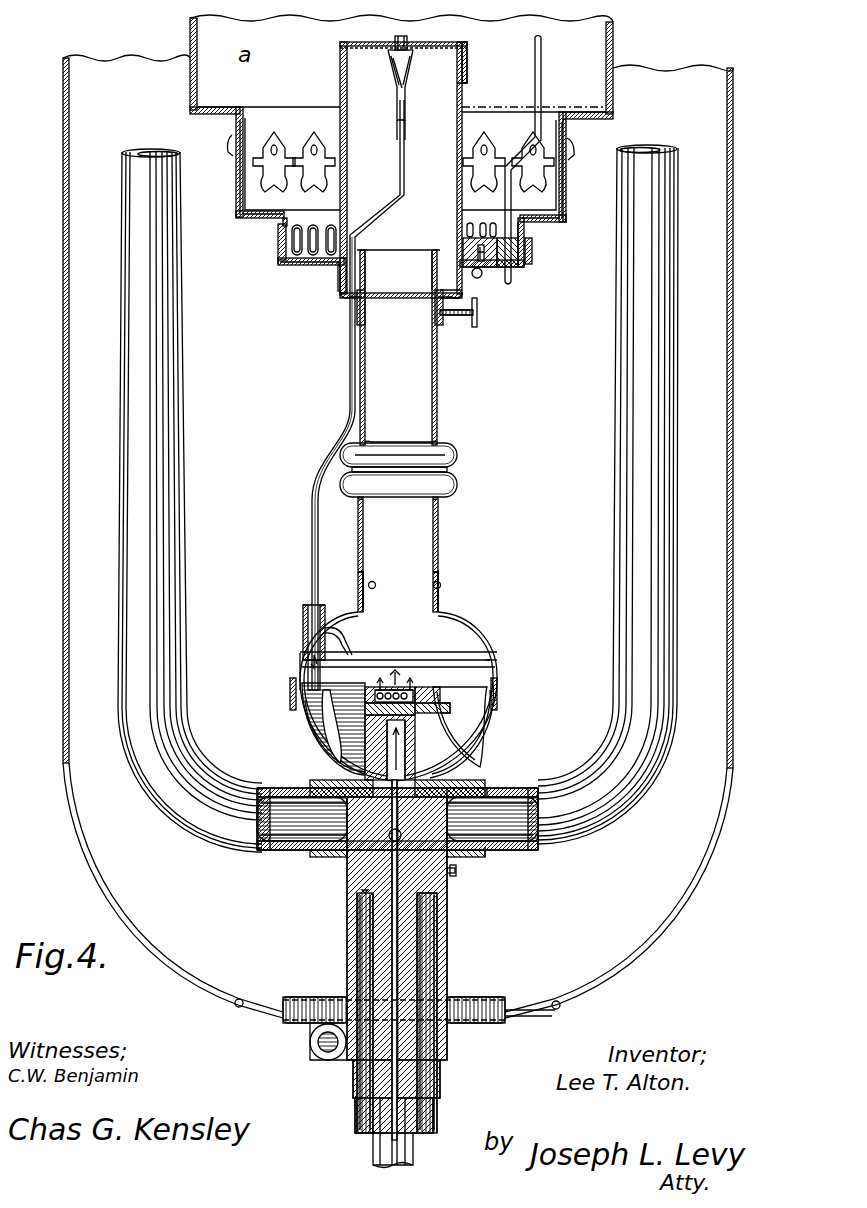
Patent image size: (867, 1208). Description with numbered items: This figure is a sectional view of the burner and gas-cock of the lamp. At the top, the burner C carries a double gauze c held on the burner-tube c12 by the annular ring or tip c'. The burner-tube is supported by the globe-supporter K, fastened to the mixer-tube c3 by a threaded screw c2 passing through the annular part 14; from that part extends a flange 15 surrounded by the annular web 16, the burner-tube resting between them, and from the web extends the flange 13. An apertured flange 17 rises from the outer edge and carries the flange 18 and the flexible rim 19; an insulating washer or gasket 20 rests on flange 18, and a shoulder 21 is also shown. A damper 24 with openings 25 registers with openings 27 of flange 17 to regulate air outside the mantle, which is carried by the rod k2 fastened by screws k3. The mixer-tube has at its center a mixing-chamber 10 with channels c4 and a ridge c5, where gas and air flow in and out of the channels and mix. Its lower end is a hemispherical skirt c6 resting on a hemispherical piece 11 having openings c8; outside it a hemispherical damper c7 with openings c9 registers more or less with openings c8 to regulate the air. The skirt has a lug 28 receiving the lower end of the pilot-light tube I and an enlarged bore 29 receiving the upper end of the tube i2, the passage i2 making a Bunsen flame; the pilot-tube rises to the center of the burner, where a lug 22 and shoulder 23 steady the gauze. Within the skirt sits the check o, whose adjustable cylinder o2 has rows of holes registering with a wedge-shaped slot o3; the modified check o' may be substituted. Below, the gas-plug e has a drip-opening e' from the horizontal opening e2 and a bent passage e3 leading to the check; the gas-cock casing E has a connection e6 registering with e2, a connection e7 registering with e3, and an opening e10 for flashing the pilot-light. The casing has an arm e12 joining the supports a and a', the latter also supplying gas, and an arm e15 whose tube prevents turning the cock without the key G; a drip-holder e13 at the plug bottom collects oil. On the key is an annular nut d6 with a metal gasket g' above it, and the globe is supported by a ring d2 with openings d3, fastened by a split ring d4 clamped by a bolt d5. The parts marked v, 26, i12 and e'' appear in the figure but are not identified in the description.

The support a is at (398, 498).
The supply-pipe support a' is at (415, 536).
The insulating washer or gasket 20 is at (246, 220).
The flexible rim 19 is at (236, 200).
The flange 18 is at (262, 225).
The shoulder 21 is at (228, 132).
The rod k2 is at (541, 105).
The screws k3 is at (533, 262).
The openings 25 is at (280, 243).
The flange 13 is at (312, 258).
The damper 24 is at (278, 260).
The apertured flange 17 is at (290, 265).
The openings 27 is at (330, 262).
The block 26 is at (536, 252).
The annular web 16 is at (476, 278).
The burner C is at (403, 170).
The double gauze c is at (462, 54).
The annular ring or tip c' is at (479, 62).
The burner-tube c12 is at (470, 100).
The lug 22 is at (406, 44).
The fitting i12 is at (394, 47).
The valve v is at (410, 55).
The shoulder 23 is at (388, 56).
The pilot-light tube I is at (466, 962).
The mixer-tube c3 is at (447, 382).
The flange 15 is at (433, 265).
The annular part 14 is at (443, 328).
The threaded screw c2 is at (480, 314).
The channels c4 is at (458, 446).
The mixing-chamber 10 is at (400, 457).
The ridge c5 is at (460, 470).
The hemispherical skirt c6 is at (480, 625).
The lug 28 is at (302, 612).
The enlarged bore 29 is at (300, 642).
The passage i2 is at (330, 643).
The hemispherical piece 11 is at (300, 682).
The wedge-shaped slot o3 is at (395, 680).
The adjustable cylinder o2 is at (425, 695).
The check o is at (333, 729).
The modified check o' is at (324, 736).
The hemispherical damper c7 is at (502, 688).
The openings c8 is at (460, 700).
The openings c9 is at (490, 718).
The gas-cock casing E is at (352, 870).
The bent passage e3 is at (460, 780).
The connection e7 is at (486, 790).
The main supply connection e6 is at (440, 830).
The opening e10 is at (347, 830).
The lower flange e'' is at (390, 870).
The horizontal opening e2 is at (450, 872).
The arm e12 is at (480, 857).
The arm e15 is at (440, 893).
The gas-plug e is at (451, 1012).
The drip-opening e' is at (439, 950).
The gasket g' is at (333, 1010).
The openings d3 is at (475, 997).
The split ring d4 is at (452, 1040).
The bolt d5 is at (310, 1042).
The ring d2 is at (540, 1012).
The drip-holder e13 is at (403, 1094).
The annular nut d6 is at (372, 1132).
The key G is at (372, 1160).
The globe-supporter K is at (585, 172).